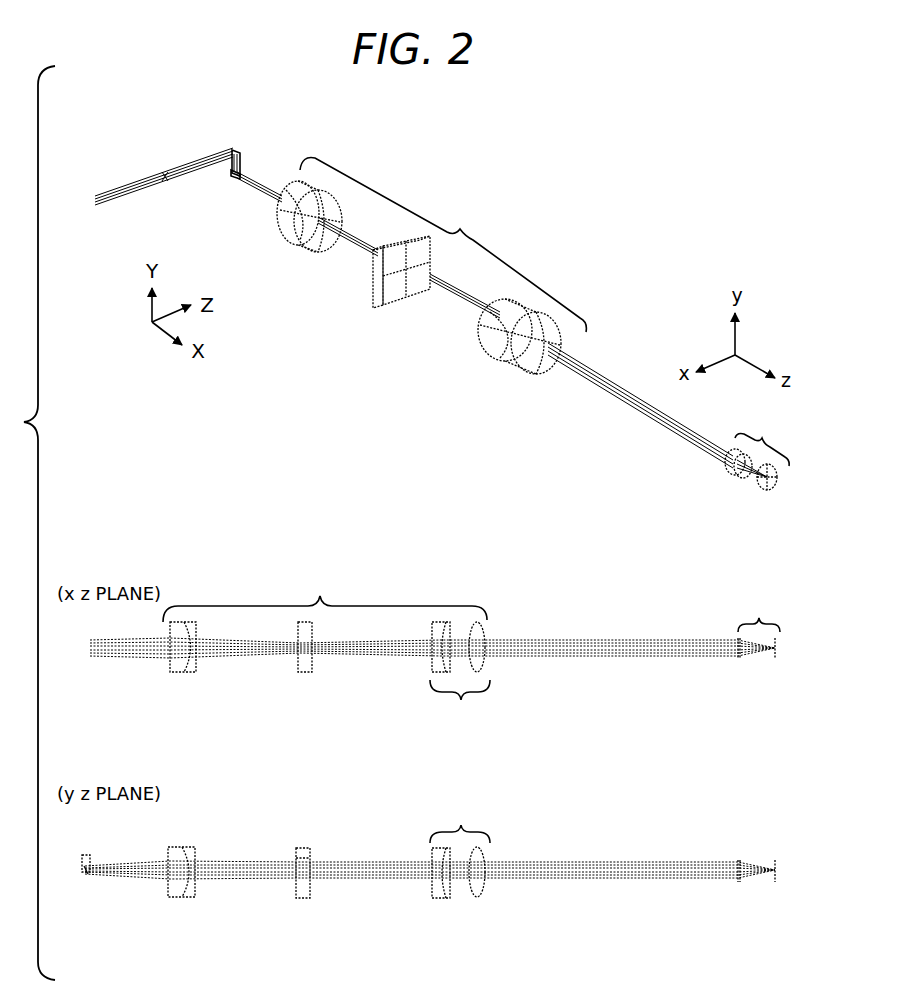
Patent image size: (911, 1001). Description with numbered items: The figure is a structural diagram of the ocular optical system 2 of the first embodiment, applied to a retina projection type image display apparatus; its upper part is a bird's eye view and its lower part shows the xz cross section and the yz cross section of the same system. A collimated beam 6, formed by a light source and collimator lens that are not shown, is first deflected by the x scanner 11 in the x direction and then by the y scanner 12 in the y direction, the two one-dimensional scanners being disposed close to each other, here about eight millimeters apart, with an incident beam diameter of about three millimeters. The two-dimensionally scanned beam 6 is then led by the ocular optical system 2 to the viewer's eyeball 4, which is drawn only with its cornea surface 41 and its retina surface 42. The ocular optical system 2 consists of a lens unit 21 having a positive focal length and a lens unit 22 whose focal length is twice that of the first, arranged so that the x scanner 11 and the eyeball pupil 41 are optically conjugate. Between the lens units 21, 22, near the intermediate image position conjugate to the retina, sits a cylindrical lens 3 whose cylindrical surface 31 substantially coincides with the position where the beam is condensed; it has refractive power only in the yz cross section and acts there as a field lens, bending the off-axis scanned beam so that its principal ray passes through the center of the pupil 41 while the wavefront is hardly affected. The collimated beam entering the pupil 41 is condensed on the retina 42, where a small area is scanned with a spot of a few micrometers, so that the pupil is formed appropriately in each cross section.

The ocular optical system 2 is at (374, 390).
The cylindrical lens 3 is at (378, 286).
The eyeball 4 is at (762, 526).
The beam 6 is at (152, 648).
The x scanner 11 is at (237, 150).
The y scanner 12 is at (233, 174).
The lens unit 21 is at (196, 665).
The lens unit 22 is at (461, 700).
The cylindrical surface 31 is at (298, 858).
The iris 41 is at (727, 478).
The retina 42 is at (758, 492).